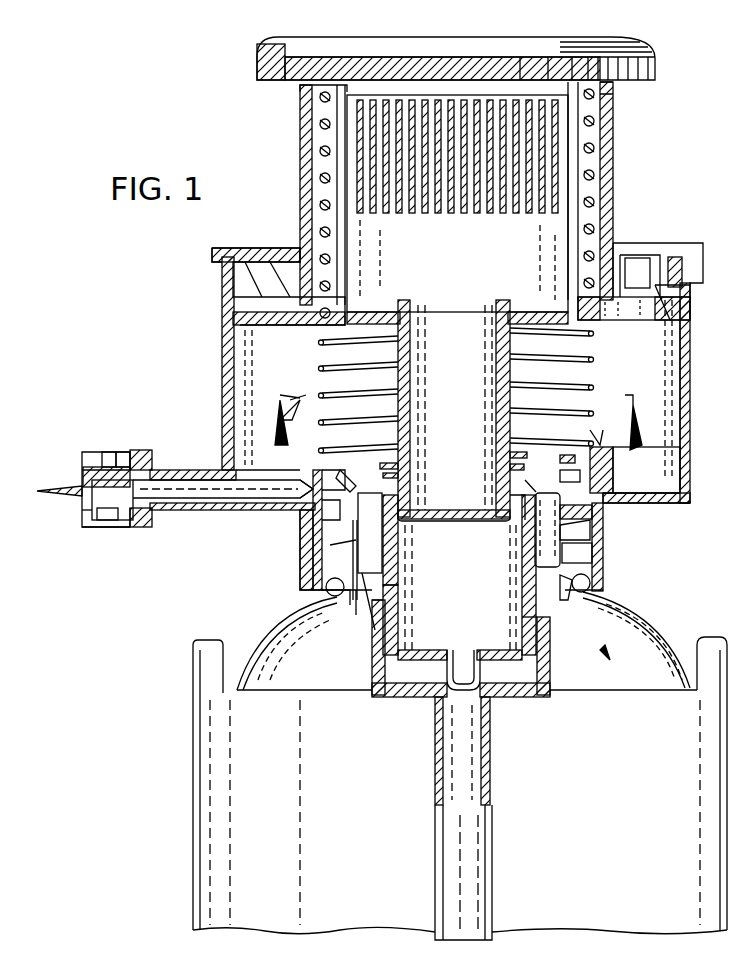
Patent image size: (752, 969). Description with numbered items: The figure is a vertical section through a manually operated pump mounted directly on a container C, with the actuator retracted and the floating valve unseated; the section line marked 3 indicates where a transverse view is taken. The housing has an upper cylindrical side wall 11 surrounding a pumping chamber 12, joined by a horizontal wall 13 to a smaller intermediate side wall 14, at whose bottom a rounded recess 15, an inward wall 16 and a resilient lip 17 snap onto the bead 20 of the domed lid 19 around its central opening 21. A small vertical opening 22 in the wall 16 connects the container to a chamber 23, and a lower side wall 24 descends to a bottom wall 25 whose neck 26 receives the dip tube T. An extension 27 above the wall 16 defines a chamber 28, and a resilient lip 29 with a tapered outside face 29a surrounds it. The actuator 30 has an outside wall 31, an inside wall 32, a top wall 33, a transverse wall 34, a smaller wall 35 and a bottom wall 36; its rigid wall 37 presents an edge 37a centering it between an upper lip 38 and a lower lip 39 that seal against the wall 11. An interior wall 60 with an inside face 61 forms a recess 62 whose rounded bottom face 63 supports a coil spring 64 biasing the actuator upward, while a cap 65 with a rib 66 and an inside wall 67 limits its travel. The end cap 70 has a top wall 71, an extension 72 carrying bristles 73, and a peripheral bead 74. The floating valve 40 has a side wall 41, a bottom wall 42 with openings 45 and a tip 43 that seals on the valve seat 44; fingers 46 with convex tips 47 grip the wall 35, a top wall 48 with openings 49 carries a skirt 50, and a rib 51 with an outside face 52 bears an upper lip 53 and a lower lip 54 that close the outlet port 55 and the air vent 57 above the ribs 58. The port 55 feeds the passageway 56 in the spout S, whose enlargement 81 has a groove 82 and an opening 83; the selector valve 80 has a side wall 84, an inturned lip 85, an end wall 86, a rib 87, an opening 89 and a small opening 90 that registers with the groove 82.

The end cap 70 is at (660, 52).
The top wall 71 is at (330, 78).
The cylindrical extension 72 is at (305, 87).
The bristles 73 is at (445, 213).
The rounded bead 74 is at (262, 45).
The actuator 30 is at (613, 165).
The outside wall 31 is at (613, 130).
The inside wall 32 is at (555, 250).
The top wall 33 is at (613, 92).
The transverse wall 34 is at (370, 305).
The cylindrical wall 35 is at (410, 378).
The bottom wall 36 is at (452, 505).
The transverse wall 37 is at (650, 292).
The outside edge 37a is at (690, 288).
The upper lip 38 is at (682, 268).
The lower lip 39 is at (668, 318).
The upper side wall 11 is at (690, 382).
The pumping chamber 12 is at (668, 440).
The transverse wall 13 is at (660, 503).
The intermediate side wall 14 is at (603, 558).
The recess 15 is at (590, 583).
The transverse wall 16 is at (577, 553).
The annular lip 17 is at (566, 600).
The lid 19 is at (650, 620).
The bead 20 is at (344, 583).
The central opening 21 is at (350, 600).
The vertical opening 22 is at (358, 605).
The chamber 23 is at (322, 560).
The lower side wall 24 is at (372, 655).
The bottom wall 25 is at (510, 697).
The neck 26 is at (490, 758).
The extension 27 is at (370, 561).
The chamber 28 is at (398, 563).
The annular lip 29 is at (357, 540).
The outside face 29a is at (330, 545).
The floating valve 40 is at (540, 625).
The side wall 41 is at (398, 595).
The bottom wall 42 is at (420, 650).
The tip 43 is at (470, 660).
The valve seat 44 is at (430, 683).
The openings 45 is at (500, 650).
The fingers 46 is at (385, 480).
The convex tip 47 is at (510, 500).
The top wall 48 is at (575, 450).
The openings 49 is at (536, 485).
The skirt 50 is at (547, 530).
The rib 51 is at (590, 534).
The outside face 52 is at (592, 514).
The upper lip 53 is at (368, 484).
The lower lip 54 is at (322, 500).
The product outlet port 55 is at (300, 484).
The longitudinal passageway 56 is at (200, 480).
The air vent opening 57 is at (322, 530).
The convex ribs 58 is at (300, 592).
The interior wall 60 is at (613, 470).
The inside face 61 is at (570, 483).
The recess 62 is at (600, 428).
The bottom face 63 is at (605, 455).
The coil spring 64 is at (322, 368).
The cap 65 is at (648, 255).
The rib 66 is at (637, 273).
The inside wall 67 is at (620, 260).
The discharge selector valve 80 is at (80, 445).
The cylindrical enlargement 81 is at (100, 460).
The radial groove 82 is at (100, 527).
The radial opening 83 is at (110, 520).
The side wall 84 is at (125, 455).
The inturned lip 85 is at (148, 460).
The outer end wall 86 is at (82, 500).
The longitudinal rib 87 is at (112, 500).
The radial opening 89 is at (112, 452).
The small opening 90 is at (85, 515).
The section line 3- 3 is at (456, 413).
The discharge spout S is at (195, 508).
The dip tube T is at (492, 830).
The container C is at (460, 785).